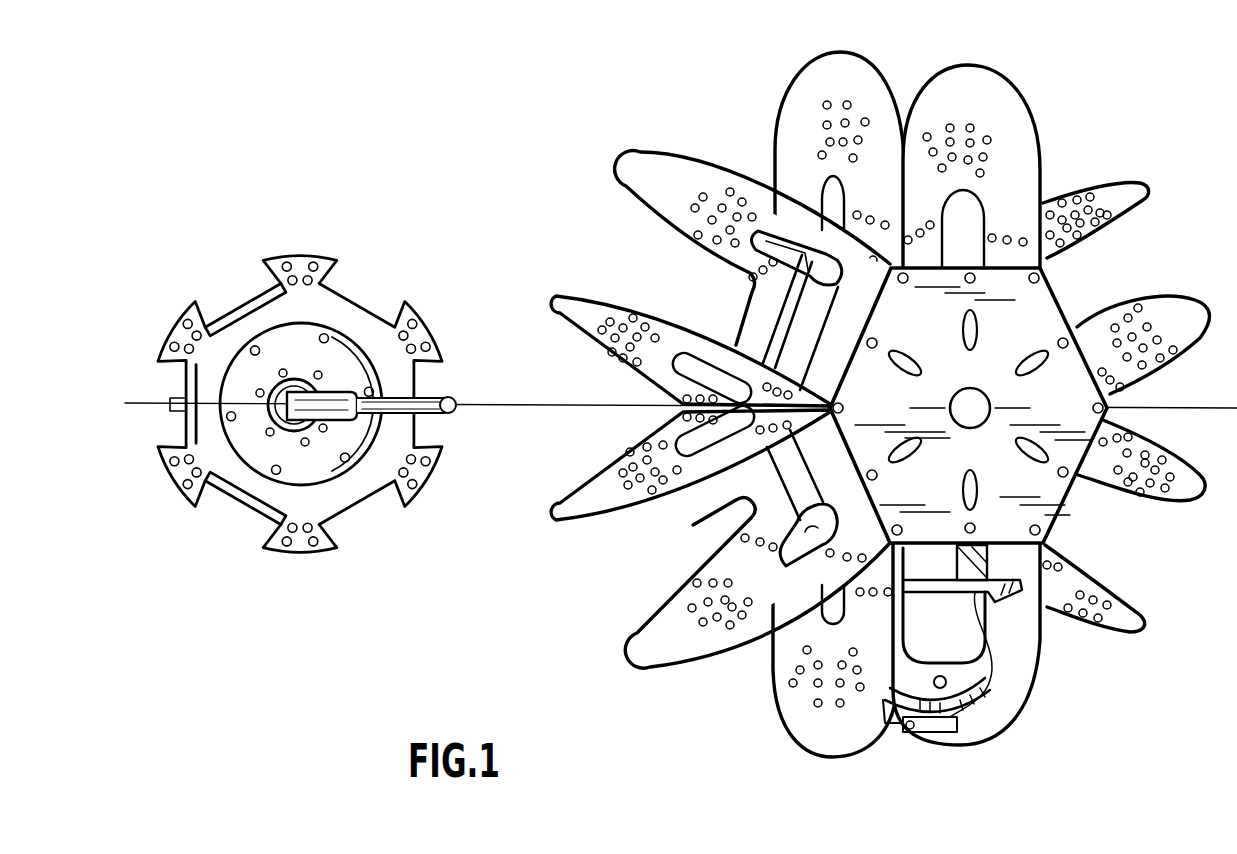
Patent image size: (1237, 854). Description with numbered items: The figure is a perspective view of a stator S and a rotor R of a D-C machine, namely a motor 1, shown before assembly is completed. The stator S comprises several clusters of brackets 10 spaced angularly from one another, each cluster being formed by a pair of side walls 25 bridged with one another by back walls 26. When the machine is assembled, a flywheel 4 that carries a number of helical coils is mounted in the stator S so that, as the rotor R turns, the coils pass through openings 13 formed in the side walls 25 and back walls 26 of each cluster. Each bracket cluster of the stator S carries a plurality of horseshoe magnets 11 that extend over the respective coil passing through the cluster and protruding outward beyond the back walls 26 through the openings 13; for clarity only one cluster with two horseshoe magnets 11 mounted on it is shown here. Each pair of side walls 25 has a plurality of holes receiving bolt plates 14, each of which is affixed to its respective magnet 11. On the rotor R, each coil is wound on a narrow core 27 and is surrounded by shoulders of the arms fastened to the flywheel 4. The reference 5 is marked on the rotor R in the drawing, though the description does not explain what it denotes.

The motor 1 is at (507, 165).
The flywheel 4 is at (238, 325).
The rotor disc 5 is at (373, 307).
The bracket cluster 10 is at (650, 262).
The horseshoe magnet 11 is at (945, 730).
The opening 13 is at (945, 257).
The bolt plate 14 is at (1000, 595).
The side wall 25 is at (684, 173).
The back wall 26 is at (760, 322).
The narrow core 27 is at (822, 384).
The rotor R is at (364, 225).
The stator S is at (1098, 297).